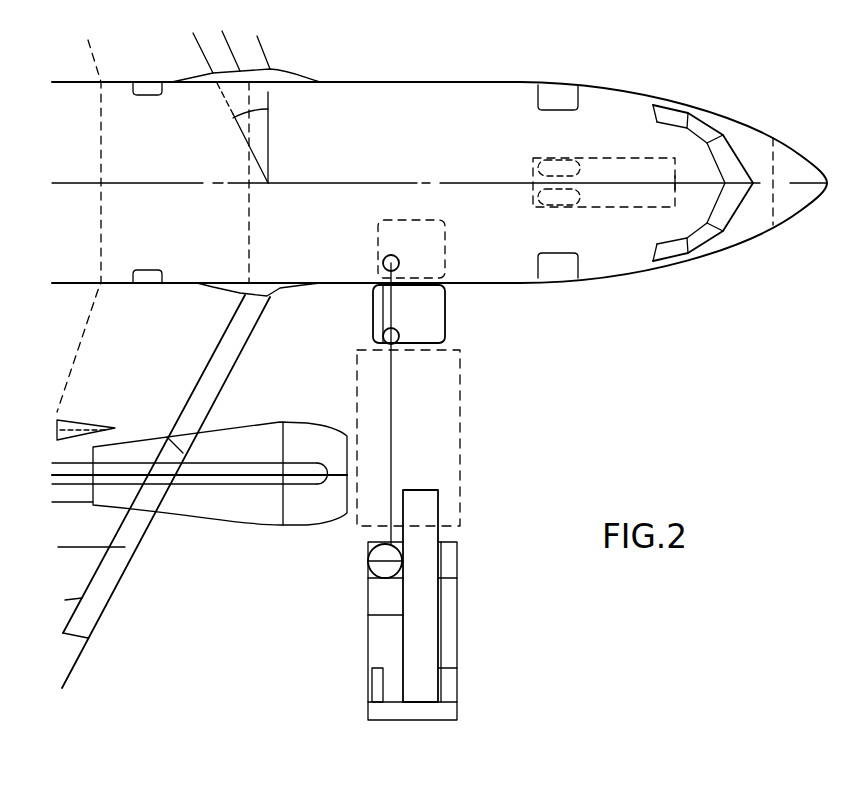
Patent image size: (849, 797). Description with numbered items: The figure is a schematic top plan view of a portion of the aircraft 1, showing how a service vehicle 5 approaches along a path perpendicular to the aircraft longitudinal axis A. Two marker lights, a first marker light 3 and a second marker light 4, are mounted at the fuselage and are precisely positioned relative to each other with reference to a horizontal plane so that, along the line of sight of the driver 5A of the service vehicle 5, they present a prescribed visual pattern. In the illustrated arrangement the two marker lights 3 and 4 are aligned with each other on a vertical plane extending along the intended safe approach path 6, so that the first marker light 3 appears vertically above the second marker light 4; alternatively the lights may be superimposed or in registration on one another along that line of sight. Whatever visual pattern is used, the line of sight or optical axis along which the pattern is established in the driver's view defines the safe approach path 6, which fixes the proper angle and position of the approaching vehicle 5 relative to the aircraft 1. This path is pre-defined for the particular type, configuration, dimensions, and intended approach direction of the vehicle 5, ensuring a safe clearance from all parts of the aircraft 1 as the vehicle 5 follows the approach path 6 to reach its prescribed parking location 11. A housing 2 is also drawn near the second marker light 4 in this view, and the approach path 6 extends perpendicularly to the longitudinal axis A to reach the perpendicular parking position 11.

The aircraft 1 is at (598, 268).
The hoist housing 2 is at (437, 315).
The first marker light 3 is at (399, 341).
The second marker light 4 is at (383, 261).
The service vehicle 5 is at (432, 595).
The driver 5A is at (368, 562).
The safe approach path 6 is at (391, 438).
The parking location 11 is at (461, 479).
The longitudinal axis A is at (392, 183).